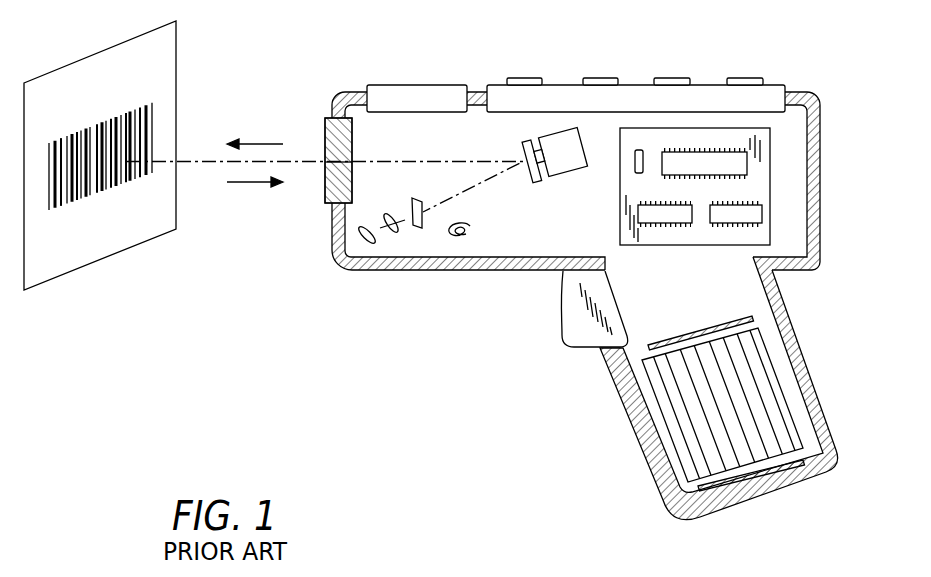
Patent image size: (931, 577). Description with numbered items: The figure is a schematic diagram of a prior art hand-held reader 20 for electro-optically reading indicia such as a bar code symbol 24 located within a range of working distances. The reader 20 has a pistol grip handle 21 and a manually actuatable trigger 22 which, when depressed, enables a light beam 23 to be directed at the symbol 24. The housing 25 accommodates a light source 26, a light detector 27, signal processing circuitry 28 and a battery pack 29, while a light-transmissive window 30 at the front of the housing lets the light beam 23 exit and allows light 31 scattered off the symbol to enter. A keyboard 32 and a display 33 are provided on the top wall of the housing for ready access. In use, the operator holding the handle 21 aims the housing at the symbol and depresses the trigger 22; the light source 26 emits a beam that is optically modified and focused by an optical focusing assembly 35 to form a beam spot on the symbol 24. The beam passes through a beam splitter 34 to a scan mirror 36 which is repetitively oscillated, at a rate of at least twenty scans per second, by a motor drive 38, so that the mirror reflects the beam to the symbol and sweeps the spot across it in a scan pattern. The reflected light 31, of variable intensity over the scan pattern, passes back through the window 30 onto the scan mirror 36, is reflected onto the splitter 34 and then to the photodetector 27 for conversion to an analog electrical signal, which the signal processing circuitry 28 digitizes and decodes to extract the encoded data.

The hand-held reader 20 is at (502, 275).
The pistol grip handle 21 is at (653, 463).
The trigger 22 is at (573, 338).
The light beam 23 is at (262, 138).
The bar code symbol 24 is at (137, 108).
The housing 25 is at (823, 253).
The light source 26 is at (362, 237).
The light detector 27 is at (471, 232).
The signal processing circuitry 28 is at (752, 168).
The battery pack 29 is at (752, 388).
The light-transmissive window 30 is at (323, 126).
The scattered light 31 is at (247, 183).
The keyboard 32 is at (707, 95).
The display 33 is at (393, 88).
The beam splitter 34 is at (423, 228).
The optical focusing assembly 35 is at (397, 236).
The scan mirror 36 is at (523, 153).
The motor drive 38 is at (567, 180).